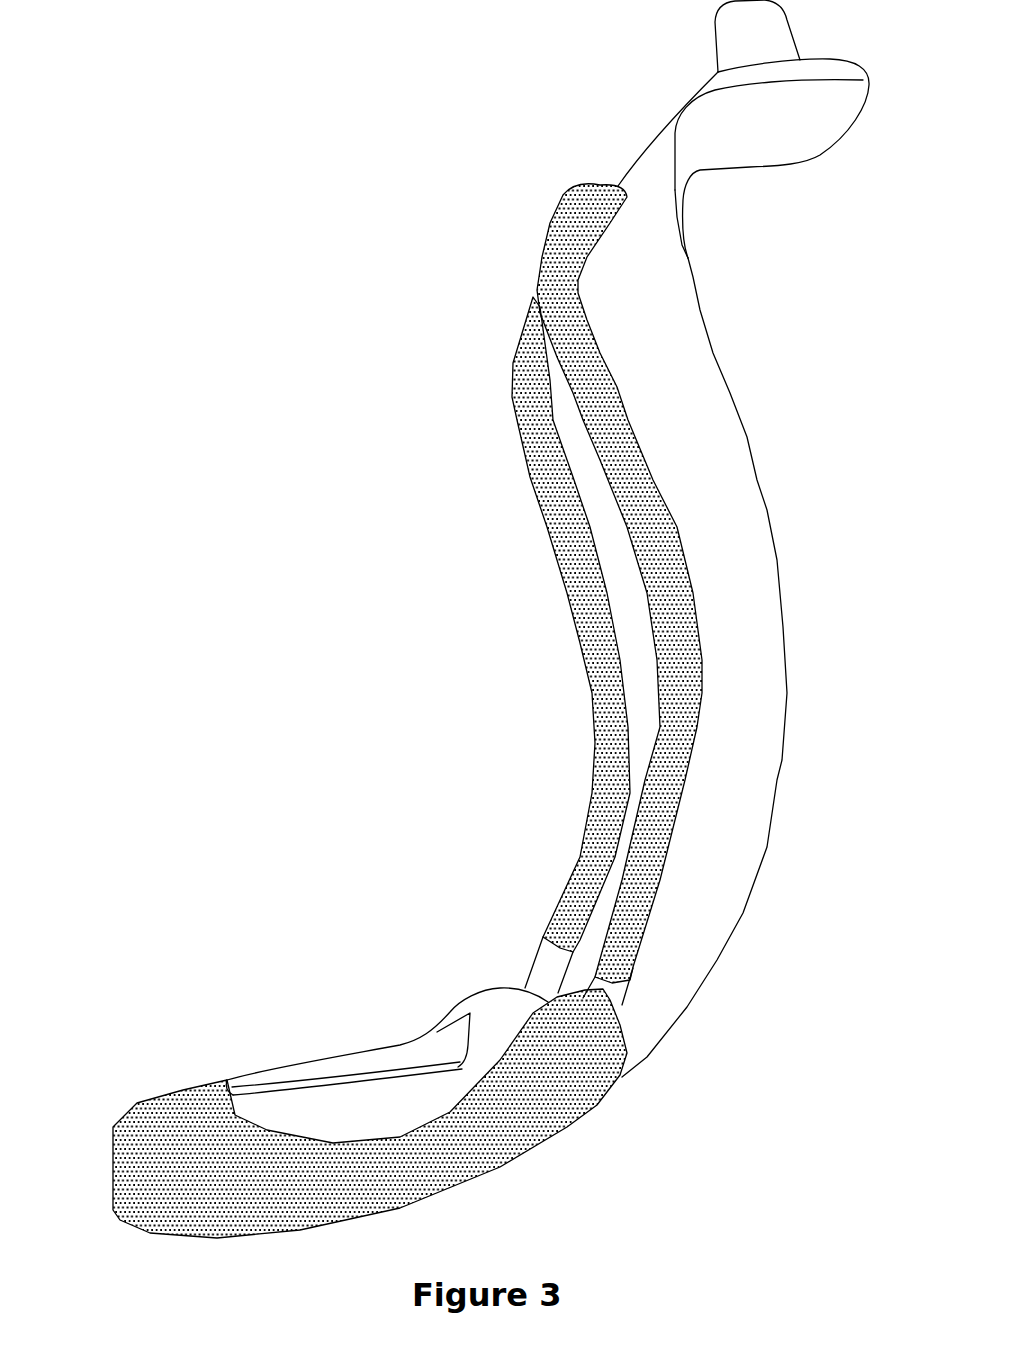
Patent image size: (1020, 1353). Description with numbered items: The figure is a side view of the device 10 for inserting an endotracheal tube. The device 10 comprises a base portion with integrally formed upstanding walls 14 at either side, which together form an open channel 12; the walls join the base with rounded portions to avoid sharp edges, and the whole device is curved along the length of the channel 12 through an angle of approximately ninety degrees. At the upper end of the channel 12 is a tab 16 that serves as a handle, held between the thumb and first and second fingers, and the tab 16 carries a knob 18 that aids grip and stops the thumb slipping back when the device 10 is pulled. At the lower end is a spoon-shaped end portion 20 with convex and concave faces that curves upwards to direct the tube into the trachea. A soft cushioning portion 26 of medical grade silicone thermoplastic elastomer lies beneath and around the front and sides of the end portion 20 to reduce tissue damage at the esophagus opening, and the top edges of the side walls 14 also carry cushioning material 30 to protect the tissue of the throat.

The device 10 is at (825, 1042).
The open channel 12 is at (580, 460).
The upstanding walls 14 is at (758, 690).
The tab 16 is at (736, 128).
The knob 18 is at (782, 33).
The spoon-shaped end portion 20 is at (296, 1066).
The soft cushioning portion 26 is at (160, 1208).
The cushioning material 30 is at (582, 856).